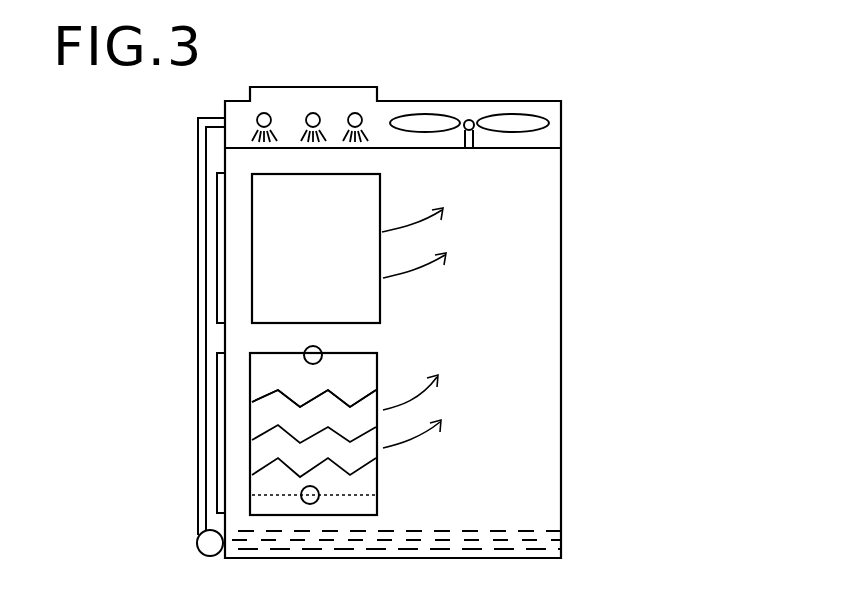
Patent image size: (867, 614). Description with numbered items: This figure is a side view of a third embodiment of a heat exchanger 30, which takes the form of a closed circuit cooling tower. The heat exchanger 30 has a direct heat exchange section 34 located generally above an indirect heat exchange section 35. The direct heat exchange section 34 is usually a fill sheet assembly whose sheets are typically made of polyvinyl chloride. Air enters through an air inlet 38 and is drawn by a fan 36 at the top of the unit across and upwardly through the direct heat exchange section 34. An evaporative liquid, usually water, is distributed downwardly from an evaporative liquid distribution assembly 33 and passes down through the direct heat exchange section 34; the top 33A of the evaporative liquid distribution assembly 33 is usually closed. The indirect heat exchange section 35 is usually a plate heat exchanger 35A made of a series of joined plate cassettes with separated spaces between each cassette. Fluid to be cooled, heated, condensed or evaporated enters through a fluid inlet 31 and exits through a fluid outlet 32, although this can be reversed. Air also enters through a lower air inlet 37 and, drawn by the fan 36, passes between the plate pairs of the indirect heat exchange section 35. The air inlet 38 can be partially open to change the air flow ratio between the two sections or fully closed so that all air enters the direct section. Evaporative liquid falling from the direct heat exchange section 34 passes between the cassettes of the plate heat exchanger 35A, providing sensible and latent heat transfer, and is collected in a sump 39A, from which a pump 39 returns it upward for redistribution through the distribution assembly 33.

The heat exchanger 30 is at (608, 165).
The fluid inlet 31 is at (319, 493).
The fluid outlet 32 is at (322, 350).
The evaporative liquid distribution assembly 33 is at (356, 113).
The top of the evaporative liquid distribution assembly 33A is at (263, 87).
The direct heat exchange section 34 is at (380, 190).
The indirect heat exchange section 35 is at (380, 365).
The plate heat exchanger 35A is at (380, 388).
The fan 36 is at (510, 113).
The air inlet 37 is at (217, 441).
The air inlet 38 is at (217, 283).
The pump 39 is at (197, 549).
The sump 39A is at (513, 525).